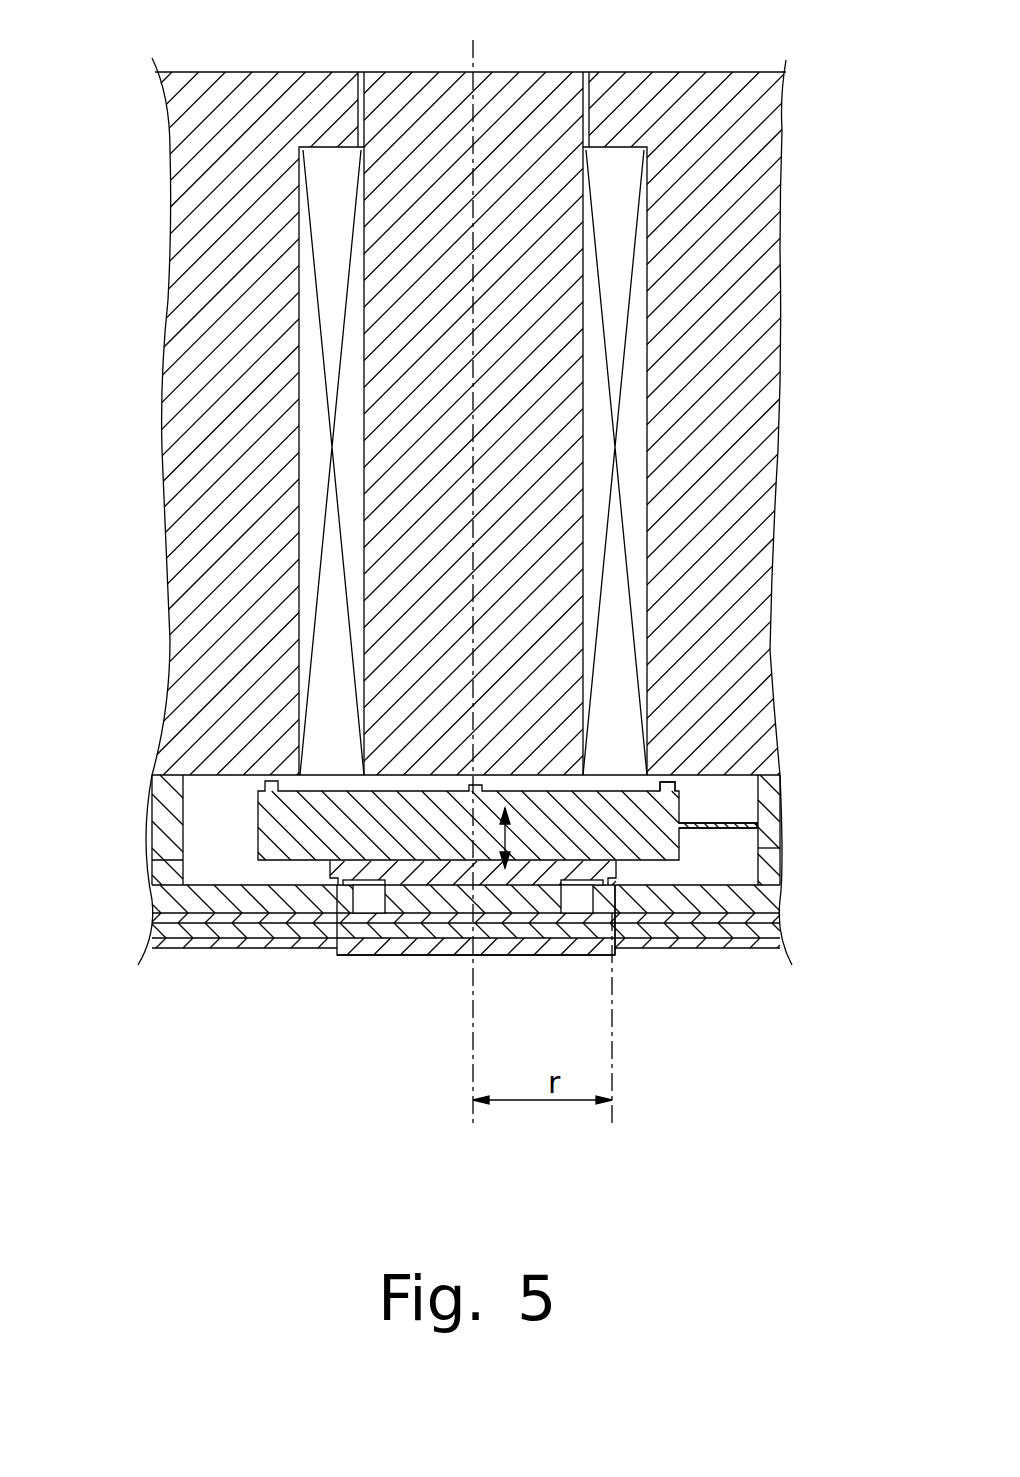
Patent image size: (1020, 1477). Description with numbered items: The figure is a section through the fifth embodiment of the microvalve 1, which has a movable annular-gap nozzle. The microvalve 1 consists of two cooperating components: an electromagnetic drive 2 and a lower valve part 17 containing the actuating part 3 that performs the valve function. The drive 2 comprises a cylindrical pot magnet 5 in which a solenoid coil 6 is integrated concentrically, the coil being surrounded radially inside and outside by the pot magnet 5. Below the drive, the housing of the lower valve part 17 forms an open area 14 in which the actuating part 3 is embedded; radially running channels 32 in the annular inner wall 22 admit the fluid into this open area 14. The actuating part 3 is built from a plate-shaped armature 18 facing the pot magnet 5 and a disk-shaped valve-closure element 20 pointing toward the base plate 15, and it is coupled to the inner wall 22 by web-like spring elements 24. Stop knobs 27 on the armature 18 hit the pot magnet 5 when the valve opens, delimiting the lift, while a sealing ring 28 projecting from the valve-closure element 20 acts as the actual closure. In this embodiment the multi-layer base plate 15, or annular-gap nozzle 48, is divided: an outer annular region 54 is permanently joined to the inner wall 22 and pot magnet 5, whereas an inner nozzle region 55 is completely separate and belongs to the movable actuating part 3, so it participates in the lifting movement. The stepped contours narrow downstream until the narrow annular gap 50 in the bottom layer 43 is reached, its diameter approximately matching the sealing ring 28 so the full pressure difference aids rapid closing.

The microvalve 1 is at (150, 680).
The electromagnetic drive 2 is at (800, 378).
The actuating part 3 is at (250, 826).
The pot magnet 5 is at (752, 567).
The solenoid coil 6 is at (621, 153).
The open area 14 is at (226, 866).
The base plate 15 is at (764, 905).
The lower valve part 17 is at (800, 937).
The armature 18 is at (662, 811).
The valve-closure element 20 is at (412, 873).
The inner wall 22 is at (773, 870).
The spring elements 24 is at (733, 829).
The stop knobs 27 is at (657, 778).
The sealing ring 28 is at (343, 883).
The channels 32 is at (170, 873).
The bottom layer 43 is at (682, 940).
The annular-gap nozzle 48 is at (497, 968).
The annular gap 50 is at (617, 948).
The outer annular region 54 is at (737, 930).
The inner nozzle region 55 is at (450, 948).